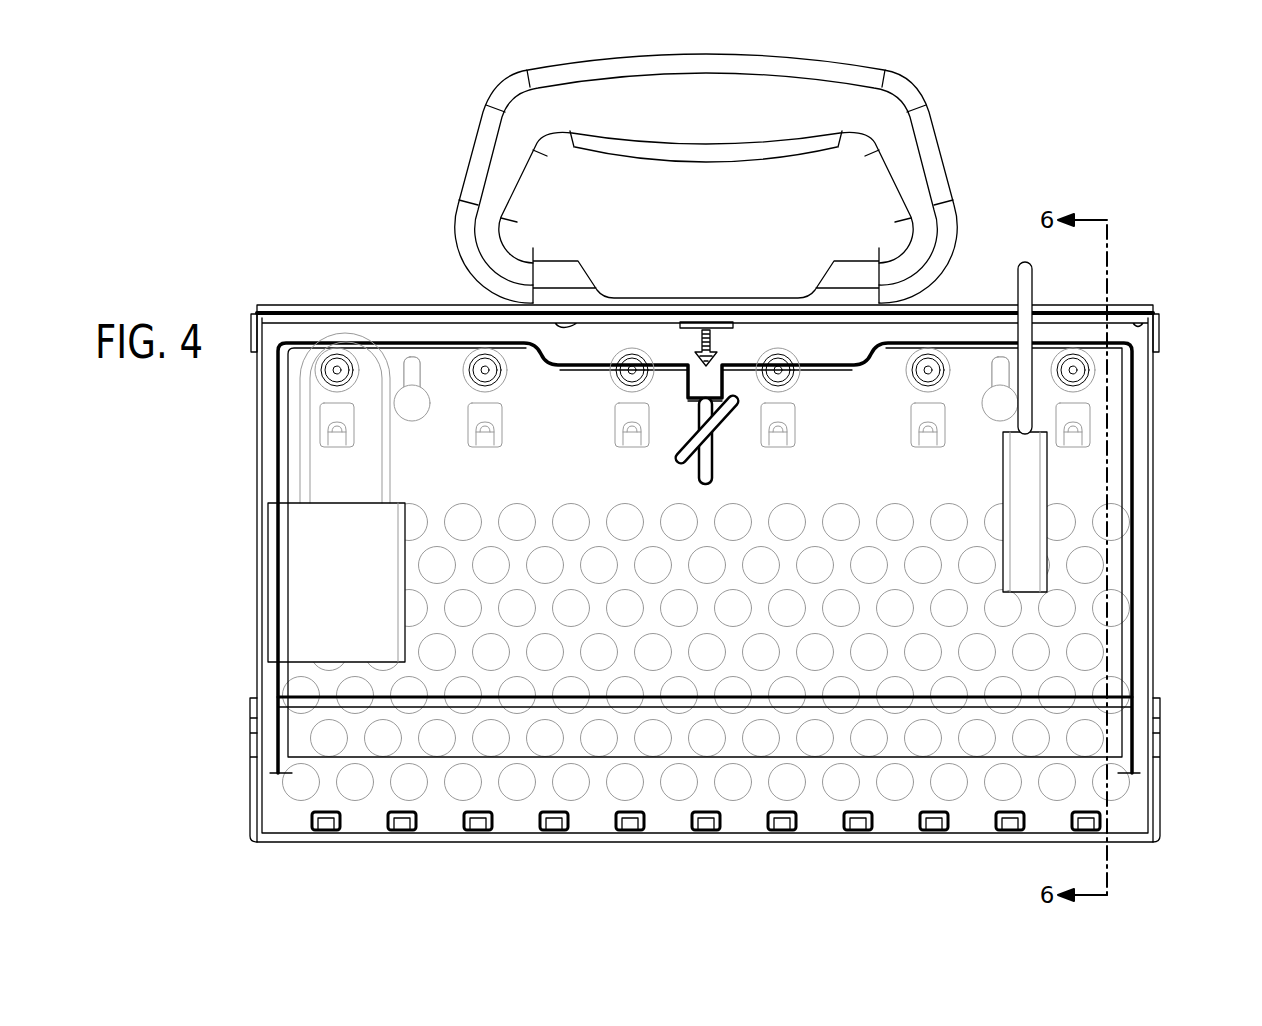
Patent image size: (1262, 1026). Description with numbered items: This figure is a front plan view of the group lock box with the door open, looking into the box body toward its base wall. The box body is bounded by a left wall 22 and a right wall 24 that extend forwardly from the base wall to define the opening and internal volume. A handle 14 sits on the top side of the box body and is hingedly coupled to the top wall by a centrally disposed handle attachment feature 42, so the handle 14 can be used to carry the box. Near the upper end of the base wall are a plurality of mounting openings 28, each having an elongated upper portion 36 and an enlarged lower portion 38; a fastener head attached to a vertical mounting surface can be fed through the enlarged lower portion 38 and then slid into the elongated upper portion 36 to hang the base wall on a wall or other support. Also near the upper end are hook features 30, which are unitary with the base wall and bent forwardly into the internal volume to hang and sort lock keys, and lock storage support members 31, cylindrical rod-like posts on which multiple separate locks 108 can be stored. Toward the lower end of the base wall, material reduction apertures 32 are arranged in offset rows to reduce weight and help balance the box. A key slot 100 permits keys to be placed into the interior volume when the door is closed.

The handle 14 is at (864, 80).
The left wall 22 is at (258, 466).
The right wall 24 is at (1156, 607).
The mounting openings 28 is at (412, 380).
The hook features 30 is at (486, 434).
The lock storage support members 31 is at (497, 378).
The material reduction apertures 32 is at (438, 565).
The elongated upper portion 36 is at (420, 372).
The enlarged lower portion 38 is at (428, 406).
The handle attachment feature 42 is at (573, 276).
The key slot 100 is at (730, 445).
The separate locks 108 is at (308, 615).